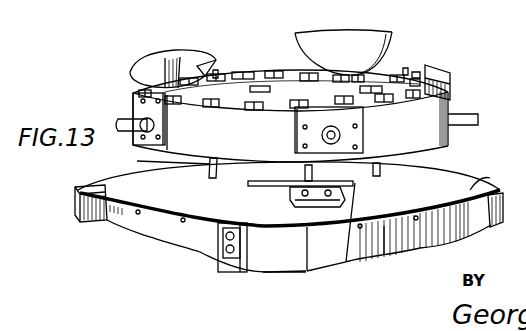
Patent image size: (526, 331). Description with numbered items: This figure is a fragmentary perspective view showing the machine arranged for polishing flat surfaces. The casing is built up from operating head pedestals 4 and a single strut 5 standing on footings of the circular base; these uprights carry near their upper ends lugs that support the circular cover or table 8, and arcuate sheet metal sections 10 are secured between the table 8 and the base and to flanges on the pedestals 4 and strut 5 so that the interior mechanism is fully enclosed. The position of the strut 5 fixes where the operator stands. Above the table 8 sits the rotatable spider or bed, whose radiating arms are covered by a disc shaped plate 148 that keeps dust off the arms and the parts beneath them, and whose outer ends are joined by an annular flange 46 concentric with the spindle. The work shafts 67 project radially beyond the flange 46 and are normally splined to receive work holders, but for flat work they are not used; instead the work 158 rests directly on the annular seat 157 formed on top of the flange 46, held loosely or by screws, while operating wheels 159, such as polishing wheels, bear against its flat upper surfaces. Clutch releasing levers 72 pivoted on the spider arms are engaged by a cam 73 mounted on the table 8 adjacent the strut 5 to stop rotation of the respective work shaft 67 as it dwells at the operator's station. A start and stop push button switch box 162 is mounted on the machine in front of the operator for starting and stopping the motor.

The operating head pedestal 4 is at (80, 207).
The strut 5 is at (288, 262).
The table 8 is at (472, 188).
The arcuate sheet metal section 10 is at (387, 252).
The annular flange 46 is at (446, 146).
The work shaft 67 is at (119, 117).
The clutch releasing lever 72 is at (180, 165).
The cam 73 is at (346, 264).
The disc shaped plate 148 is at (242, 70).
The annular seat 157 is at (416, 77).
The work 158 is at (215, 78).
The operating wheel 159 is at (138, 70).
The start and stop push button switch box 162 is at (218, 243).